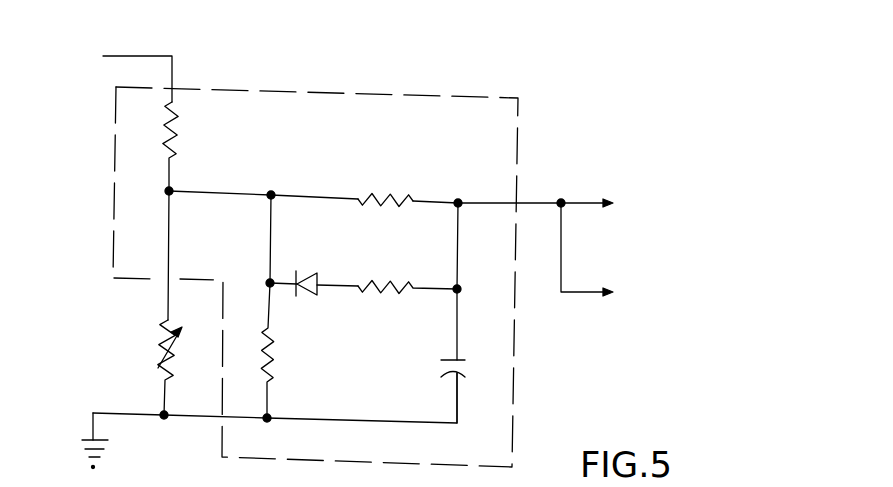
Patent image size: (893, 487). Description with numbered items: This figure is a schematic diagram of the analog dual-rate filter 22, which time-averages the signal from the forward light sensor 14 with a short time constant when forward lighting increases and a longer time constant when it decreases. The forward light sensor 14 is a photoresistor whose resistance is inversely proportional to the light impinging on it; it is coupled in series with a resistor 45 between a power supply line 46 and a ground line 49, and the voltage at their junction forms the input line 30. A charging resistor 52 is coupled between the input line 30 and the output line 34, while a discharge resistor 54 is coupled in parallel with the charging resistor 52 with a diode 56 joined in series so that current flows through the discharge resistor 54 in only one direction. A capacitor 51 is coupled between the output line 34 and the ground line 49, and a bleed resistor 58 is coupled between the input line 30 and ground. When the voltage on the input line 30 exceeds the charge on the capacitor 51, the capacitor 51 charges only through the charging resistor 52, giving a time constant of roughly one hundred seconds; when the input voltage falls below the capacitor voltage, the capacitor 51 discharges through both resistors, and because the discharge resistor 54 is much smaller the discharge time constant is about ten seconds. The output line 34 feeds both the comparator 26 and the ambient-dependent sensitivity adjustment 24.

The forward light sensor 14 is at (168, 333).
The dual-rate filter 22 is at (105, 209).
The ambient-dependent sensitivity adjustment 24 is at (690, 258).
The comparator 26 is at (690, 196).
The input line 30 is at (168, 298).
The output line 34 is at (535, 202).
The resistor 45 is at (182, 142).
The power supply line 46 is at (113, 54).
The ground line 49 is at (128, 416).
The capacitor 51 is at (446, 375).
The charging resistor 52 is at (400, 192).
The discharge resistor 54 is at (384, 273).
The diode 56 is at (307, 272).
The bleed resistor 58 is at (272, 326).